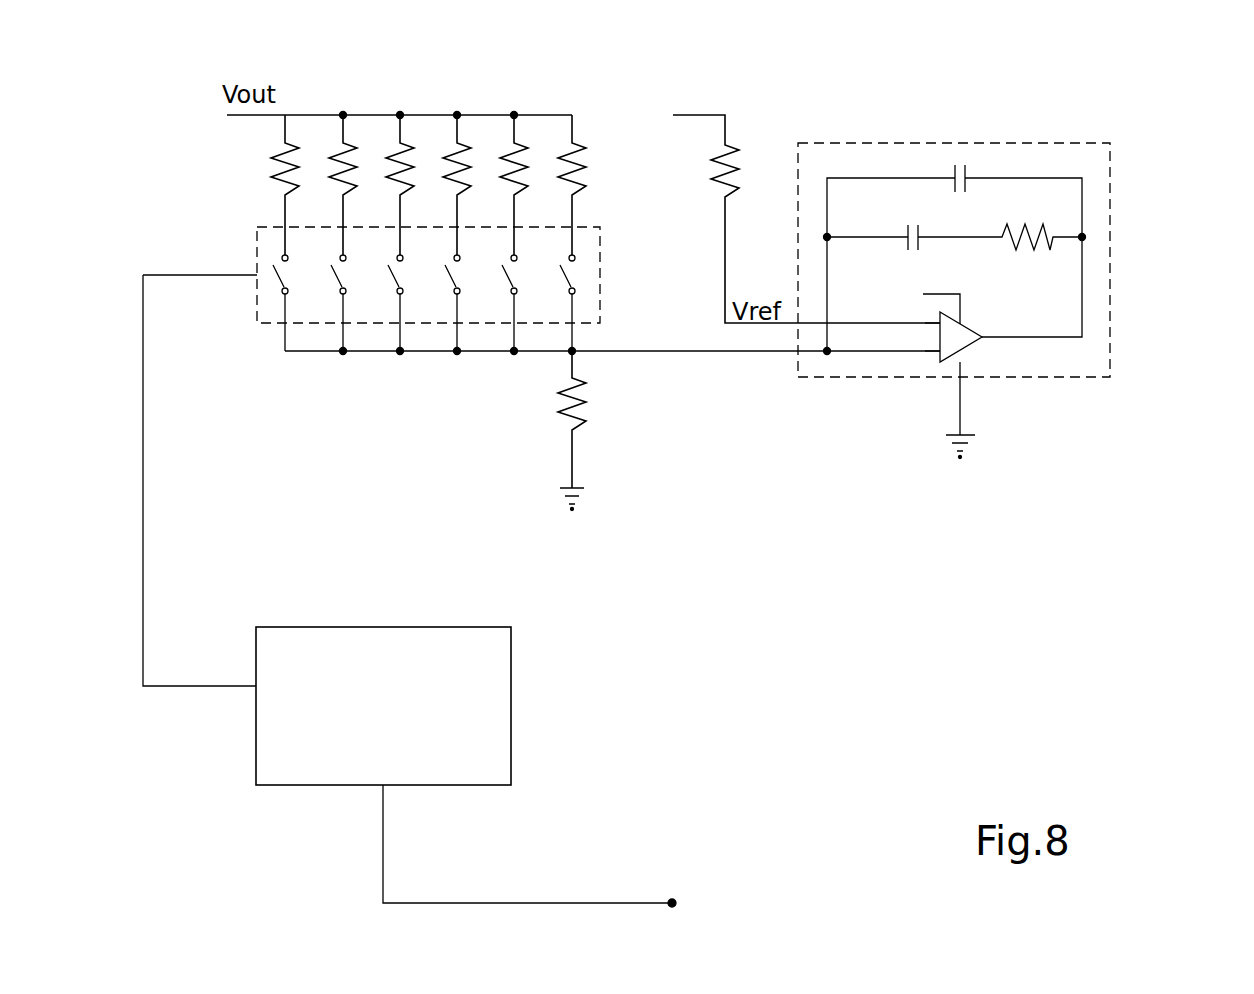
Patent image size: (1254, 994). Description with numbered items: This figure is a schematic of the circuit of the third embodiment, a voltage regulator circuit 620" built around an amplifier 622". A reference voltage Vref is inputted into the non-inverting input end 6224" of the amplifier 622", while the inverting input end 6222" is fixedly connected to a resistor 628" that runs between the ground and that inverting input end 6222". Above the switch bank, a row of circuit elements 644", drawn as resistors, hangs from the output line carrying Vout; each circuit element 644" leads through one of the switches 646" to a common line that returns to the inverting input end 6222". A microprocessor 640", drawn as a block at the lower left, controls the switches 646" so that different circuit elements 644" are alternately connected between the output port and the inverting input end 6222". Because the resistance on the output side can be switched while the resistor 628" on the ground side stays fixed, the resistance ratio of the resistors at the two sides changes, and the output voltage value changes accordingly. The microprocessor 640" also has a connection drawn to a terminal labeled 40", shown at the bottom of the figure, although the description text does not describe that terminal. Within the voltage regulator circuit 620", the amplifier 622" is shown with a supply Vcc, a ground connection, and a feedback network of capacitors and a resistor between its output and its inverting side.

The circuit elements 644 is at (520, 163).
The switches 646 is at (255, 245).
The resistor 628 is at (563, 415).
The voltage regulator circuit 620 is at (987, 313).
The amplifier 622 is at (967, 340).
The inverting input end 6222 is at (938, 332).
The non-inverting input end 6224 is at (953, 350).
The microprocessor 640 is at (496, 747).
The output terminal 40 is at (549, 846).